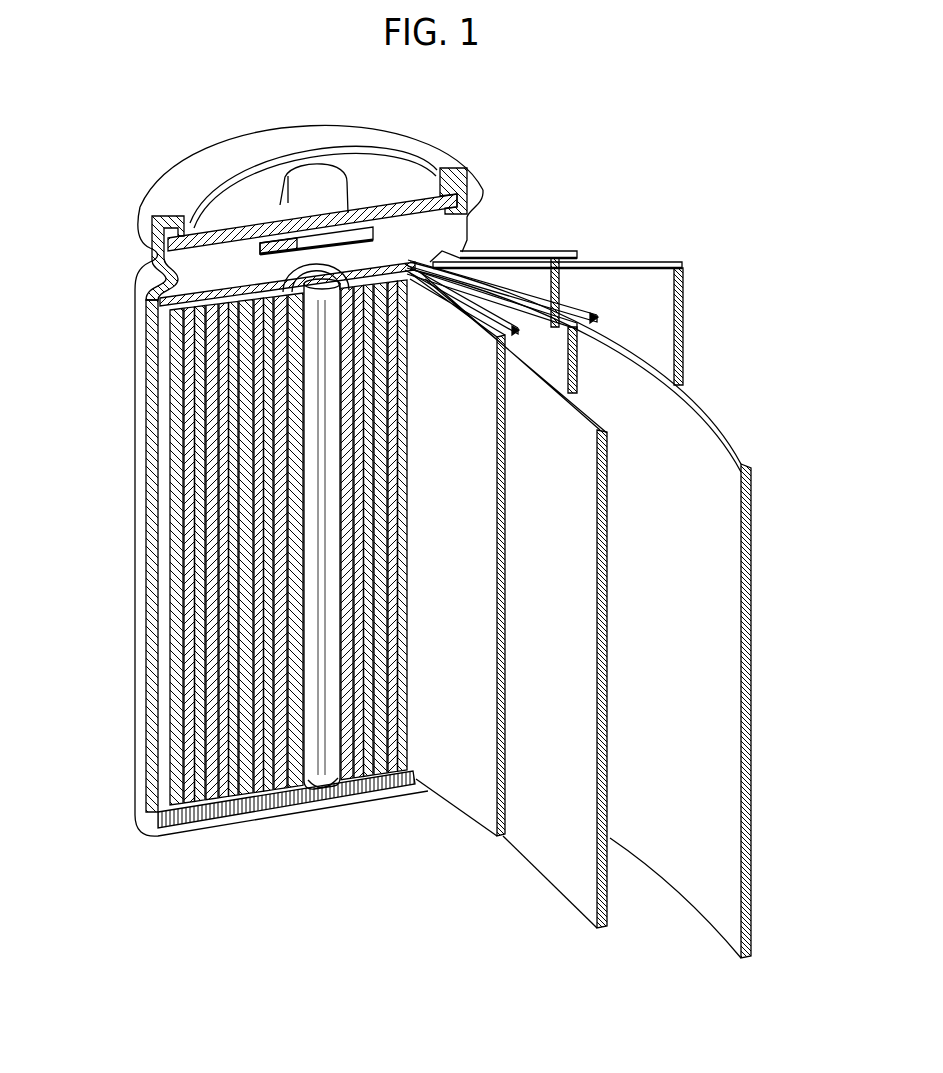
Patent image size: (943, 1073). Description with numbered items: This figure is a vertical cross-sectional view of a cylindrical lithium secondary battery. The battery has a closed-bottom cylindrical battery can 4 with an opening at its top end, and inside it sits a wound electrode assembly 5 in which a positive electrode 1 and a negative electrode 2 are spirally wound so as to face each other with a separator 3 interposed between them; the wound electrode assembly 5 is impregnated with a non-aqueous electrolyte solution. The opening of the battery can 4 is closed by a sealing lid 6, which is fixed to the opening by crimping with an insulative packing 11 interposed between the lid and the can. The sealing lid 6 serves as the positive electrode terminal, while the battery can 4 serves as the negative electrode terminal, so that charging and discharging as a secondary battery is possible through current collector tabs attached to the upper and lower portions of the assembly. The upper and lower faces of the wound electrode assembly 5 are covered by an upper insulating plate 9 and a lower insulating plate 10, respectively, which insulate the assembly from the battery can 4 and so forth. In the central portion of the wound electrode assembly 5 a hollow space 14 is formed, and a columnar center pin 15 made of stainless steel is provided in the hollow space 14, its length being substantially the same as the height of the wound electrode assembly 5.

The positive electrode 1 is at (580, 362).
The negative electrode 2 is at (598, 320).
The separator 3 is at (725, 430).
The battery can 4 is at (150, 380).
The wound electrode assembly 5 is at (804, 267).
The sealing lid 6 is at (242, 205).
The upper insulating plate 9 is at (210, 278).
The lower insulating plate 10 is at (230, 808).
The insulative packing 11 is at (472, 213).
The hollow space 14 is at (316, 812).
The center pin 15 is at (328, 790).